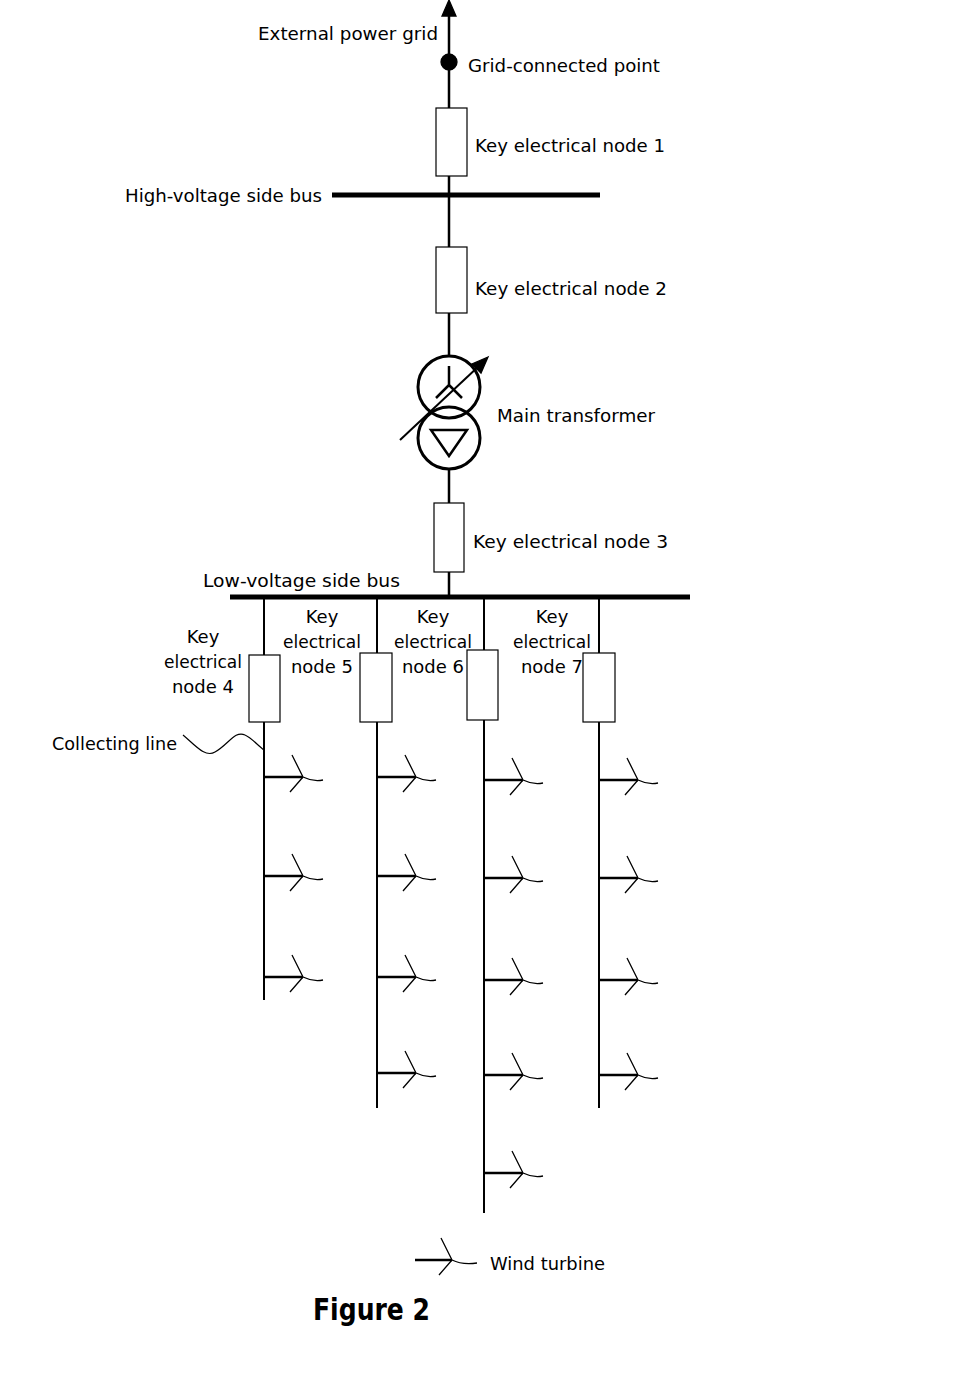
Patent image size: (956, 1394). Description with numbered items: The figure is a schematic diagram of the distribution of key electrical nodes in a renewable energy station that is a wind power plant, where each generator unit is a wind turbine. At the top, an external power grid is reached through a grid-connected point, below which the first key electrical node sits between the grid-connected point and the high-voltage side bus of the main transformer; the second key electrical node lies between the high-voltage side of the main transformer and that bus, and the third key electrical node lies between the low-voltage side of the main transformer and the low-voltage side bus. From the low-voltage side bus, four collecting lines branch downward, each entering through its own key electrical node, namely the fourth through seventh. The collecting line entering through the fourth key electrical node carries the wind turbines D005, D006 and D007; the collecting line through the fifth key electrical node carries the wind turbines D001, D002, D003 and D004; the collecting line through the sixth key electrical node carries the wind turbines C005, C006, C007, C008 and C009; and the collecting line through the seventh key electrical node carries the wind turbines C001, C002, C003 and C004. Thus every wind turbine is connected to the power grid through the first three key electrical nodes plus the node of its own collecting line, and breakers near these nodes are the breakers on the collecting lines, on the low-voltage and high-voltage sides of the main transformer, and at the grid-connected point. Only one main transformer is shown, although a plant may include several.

The wind turbine D001 is at (412, 788).
The wind turbine D002 is at (412, 887).
The wind turbine D003 is at (412, 988).
The wind turbine D004 is at (412, 1084).
The wind turbine D005 is at (296, 788).
The wind turbine D006 is at (296, 887).
The wind turbine D007 is at (295, 988).
The wind turbine C001 is at (634, 791).
The wind turbine C002 is at (634, 889).
The wind turbine C003 is at (634, 991).
The wind turbine C004 is at (632, 1086).
The wind turbine C005 is at (518, 791).
The wind turbine C006 is at (518, 889).
The wind turbine C007 is at (518, 991).
The wind turbine C008 is at (520, 1086).
The wind turbine C009 is at (520, 1184).